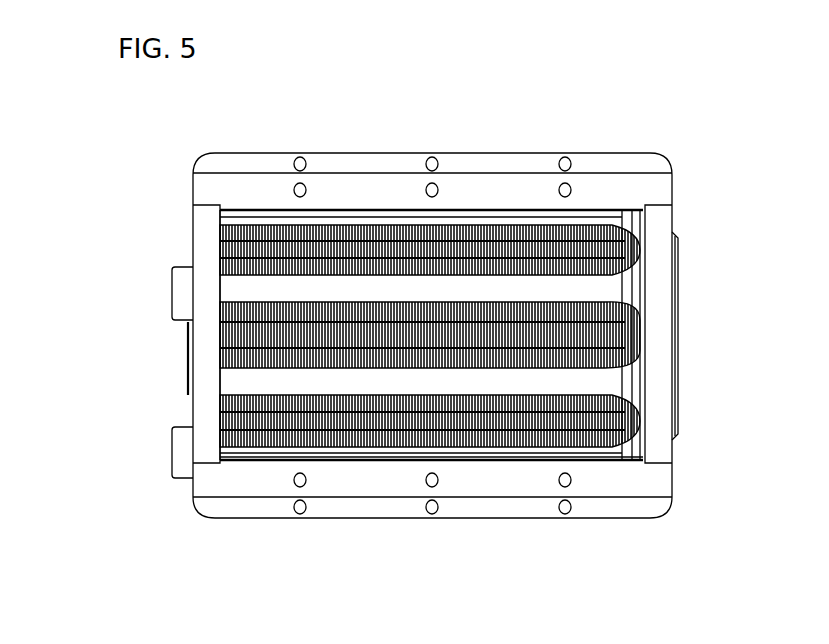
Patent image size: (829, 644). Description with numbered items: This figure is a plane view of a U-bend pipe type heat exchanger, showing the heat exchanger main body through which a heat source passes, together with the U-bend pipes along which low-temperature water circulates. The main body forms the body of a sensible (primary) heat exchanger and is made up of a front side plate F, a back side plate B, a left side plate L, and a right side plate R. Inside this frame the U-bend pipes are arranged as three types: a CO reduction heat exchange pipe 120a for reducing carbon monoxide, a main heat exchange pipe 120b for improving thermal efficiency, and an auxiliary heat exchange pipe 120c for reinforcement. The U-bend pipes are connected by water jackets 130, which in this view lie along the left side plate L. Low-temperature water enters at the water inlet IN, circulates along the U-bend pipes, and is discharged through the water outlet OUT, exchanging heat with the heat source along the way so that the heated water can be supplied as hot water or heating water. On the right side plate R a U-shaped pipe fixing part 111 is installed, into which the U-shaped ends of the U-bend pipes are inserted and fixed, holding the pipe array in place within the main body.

The back side plate B is at (477, 187).
The front side plate F is at (613, 483).
The left side plate L is at (200, 230).
The right side plate R is at (660, 452).
The U-shaped pipe fixing part 111 is at (692, 337).
The water outlet OUT is at (172, 293).
The water inlet IN is at (172, 452).
The water jacket 130 is at (178, 360).
The CO reduction heat exchange pipe 120a is at (452, 395).
The main heat exchange pipe 120b is at (528, 440).
The auxiliary heat exchange pipe 120c is at (259, 470).